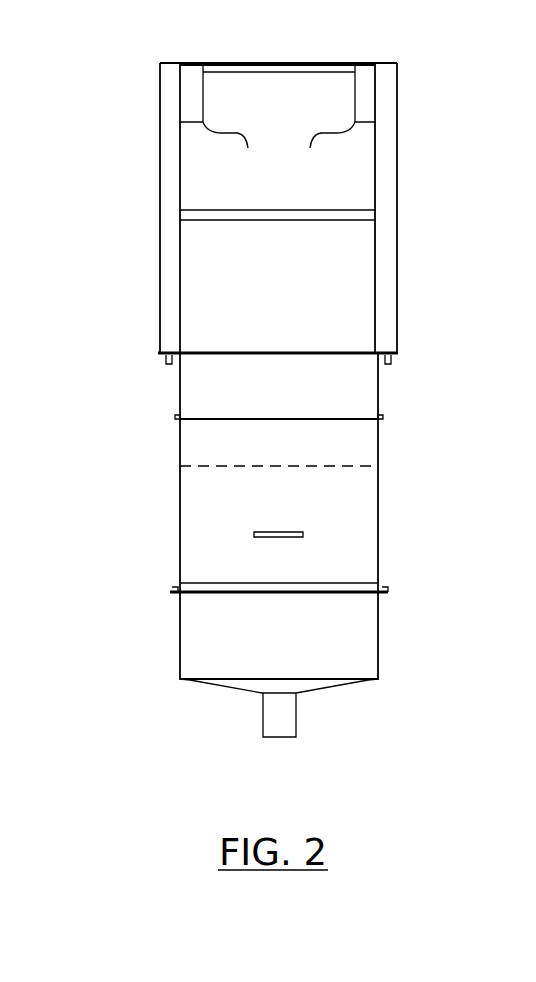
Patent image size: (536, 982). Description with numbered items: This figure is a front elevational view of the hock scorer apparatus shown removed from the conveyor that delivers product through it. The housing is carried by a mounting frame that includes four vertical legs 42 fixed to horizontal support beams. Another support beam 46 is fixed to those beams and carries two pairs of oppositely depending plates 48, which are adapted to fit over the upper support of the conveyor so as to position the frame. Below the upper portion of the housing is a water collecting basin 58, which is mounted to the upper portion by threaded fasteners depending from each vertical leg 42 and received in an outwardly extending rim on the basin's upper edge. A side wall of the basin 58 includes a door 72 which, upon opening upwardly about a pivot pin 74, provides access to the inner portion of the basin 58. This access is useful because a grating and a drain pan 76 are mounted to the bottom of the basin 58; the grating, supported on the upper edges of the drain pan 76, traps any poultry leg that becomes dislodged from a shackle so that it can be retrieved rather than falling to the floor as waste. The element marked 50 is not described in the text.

The vertical leg 42 is at (160, 167).
The support beam 46 is at (253, 65).
The depending plate 48 is at (279, 152).
The housing section 50 is at (207, 312).
The water collecting basin 58 is at (383, 467).
The door 72 is at (352, 531).
The pivot pin 74 is at (383, 415).
The drain pan 76 is at (333, 640).